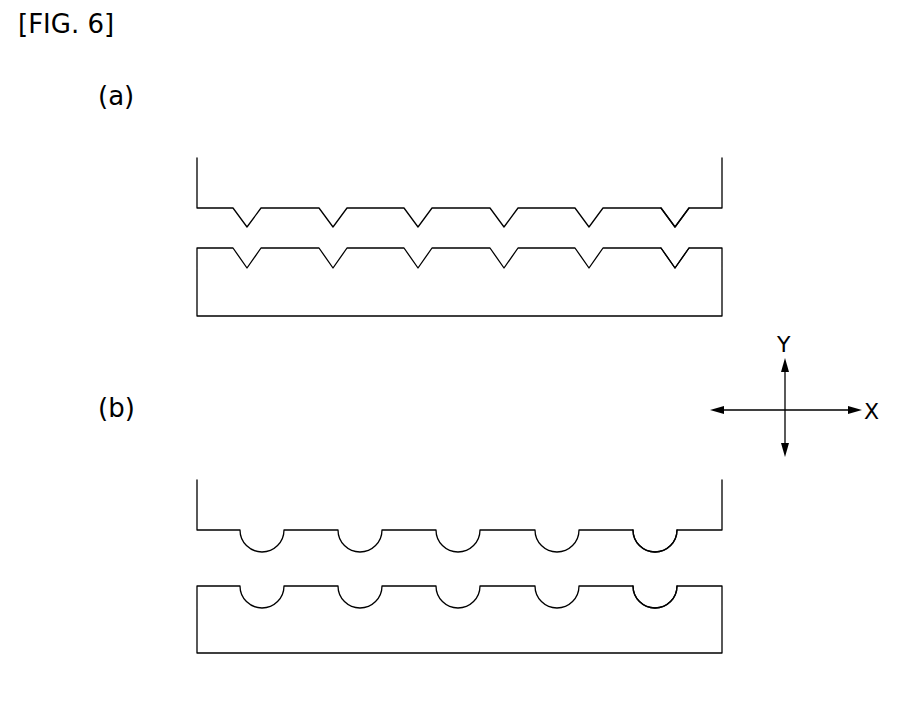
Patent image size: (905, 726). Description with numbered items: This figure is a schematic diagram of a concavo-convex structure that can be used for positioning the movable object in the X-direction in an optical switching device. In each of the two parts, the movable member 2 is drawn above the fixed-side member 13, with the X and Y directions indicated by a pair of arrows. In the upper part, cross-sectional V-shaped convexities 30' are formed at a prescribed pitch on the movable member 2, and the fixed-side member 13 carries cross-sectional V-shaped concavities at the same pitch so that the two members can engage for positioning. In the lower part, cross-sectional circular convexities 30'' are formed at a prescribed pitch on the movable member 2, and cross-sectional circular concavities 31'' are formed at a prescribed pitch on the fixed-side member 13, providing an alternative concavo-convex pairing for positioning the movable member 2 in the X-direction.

The movable member 2 is at (259, 163).
The fixed-side member 13 is at (220, 286).
The cross-sectional V-shaped convexities 30' is at (720, 188).
The cross-sectional circular convexities 30'' is at (681, 500).
The cross-sectional circular concavities 31'' is at (709, 470).